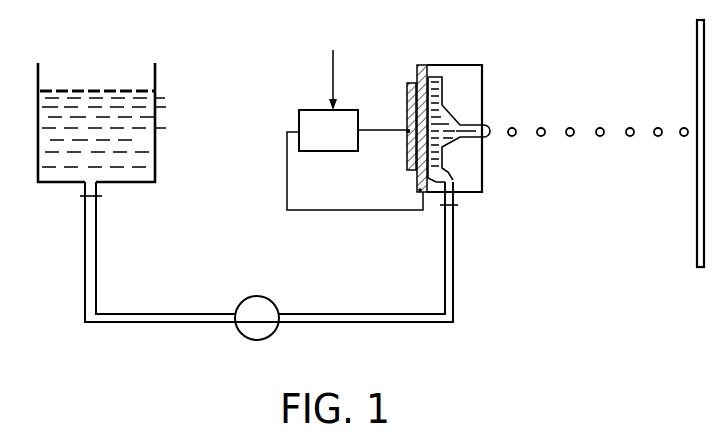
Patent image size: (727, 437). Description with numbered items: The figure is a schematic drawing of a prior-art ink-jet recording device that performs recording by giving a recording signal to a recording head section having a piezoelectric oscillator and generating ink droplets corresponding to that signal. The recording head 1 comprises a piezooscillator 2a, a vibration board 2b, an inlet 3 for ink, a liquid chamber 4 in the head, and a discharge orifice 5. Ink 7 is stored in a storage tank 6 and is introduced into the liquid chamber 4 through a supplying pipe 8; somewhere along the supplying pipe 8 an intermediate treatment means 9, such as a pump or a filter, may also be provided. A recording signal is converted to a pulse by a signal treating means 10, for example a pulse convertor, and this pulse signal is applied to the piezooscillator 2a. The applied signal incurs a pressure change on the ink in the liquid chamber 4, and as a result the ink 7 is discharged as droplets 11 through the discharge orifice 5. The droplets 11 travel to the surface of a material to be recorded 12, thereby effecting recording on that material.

The recording head 1 is at (472, 64).
The piezooscillator 2a is at (412, 83).
The vibration board 2b is at (424, 65).
The inlet 3 is at (454, 184).
The liquid chamber 4 is at (441, 87).
The discharge orifice 5 is at (487, 135).
The storage tank 6 is at (157, 118).
The ink 7 is at (140, 158).
The supplying pipe 8 is at (158, 313).
The intermediate treatment means 9 is at (256, 296).
The signal treating means 10 is at (313, 108).
The droplets 11 is at (601, 127).
The material to be recorded 12 is at (697, 237).